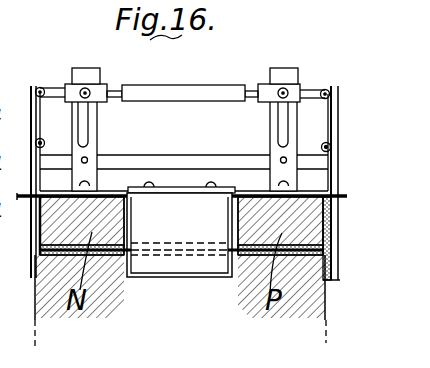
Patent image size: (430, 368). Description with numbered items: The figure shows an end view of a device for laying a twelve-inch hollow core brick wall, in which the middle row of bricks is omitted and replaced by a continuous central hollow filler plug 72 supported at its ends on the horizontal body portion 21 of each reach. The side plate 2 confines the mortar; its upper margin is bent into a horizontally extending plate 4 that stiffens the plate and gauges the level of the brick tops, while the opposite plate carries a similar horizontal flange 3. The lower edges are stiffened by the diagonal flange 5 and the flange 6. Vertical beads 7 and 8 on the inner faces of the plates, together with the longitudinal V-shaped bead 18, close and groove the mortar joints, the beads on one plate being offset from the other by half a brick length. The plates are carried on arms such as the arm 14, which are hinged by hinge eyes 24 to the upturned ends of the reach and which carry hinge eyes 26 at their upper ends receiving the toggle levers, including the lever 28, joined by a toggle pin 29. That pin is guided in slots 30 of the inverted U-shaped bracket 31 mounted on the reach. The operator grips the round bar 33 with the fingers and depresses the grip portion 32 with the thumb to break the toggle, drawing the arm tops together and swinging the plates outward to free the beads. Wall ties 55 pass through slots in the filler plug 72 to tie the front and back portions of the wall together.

The side plate 2 is at (323, 245).
The horizontal flange 3 is at (23, 192).
The horizontally extending plate 4 is at (343, 200).
The lower flange 5 is at (28, 286).
The lower flange 6 is at (338, 285).
The vertical beads 7 is at (38, 252).
The vertical beads 8 is at (333, 212).
The arm 14 is at (336, 172).
The longitudinal V-shaped bead 18 is at (326, 257).
The horizontal body portion 21 is at (174, 192).
The hinge eyes 24 is at (36, 142).
The hinge eyes 26 is at (42, 87).
The lever 28 is at (313, 89).
The toggle pin 29 is at (89, 88).
The slots 30 is at (93, 113).
The vertical bracket 31 is at (88, 73).
The grip portion 32 is at (170, 93).
The round bar 33 is at (142, 155).
The wall ties 55 is at (211, 252).
The central hollow filler plug 72 is at (160, 269).